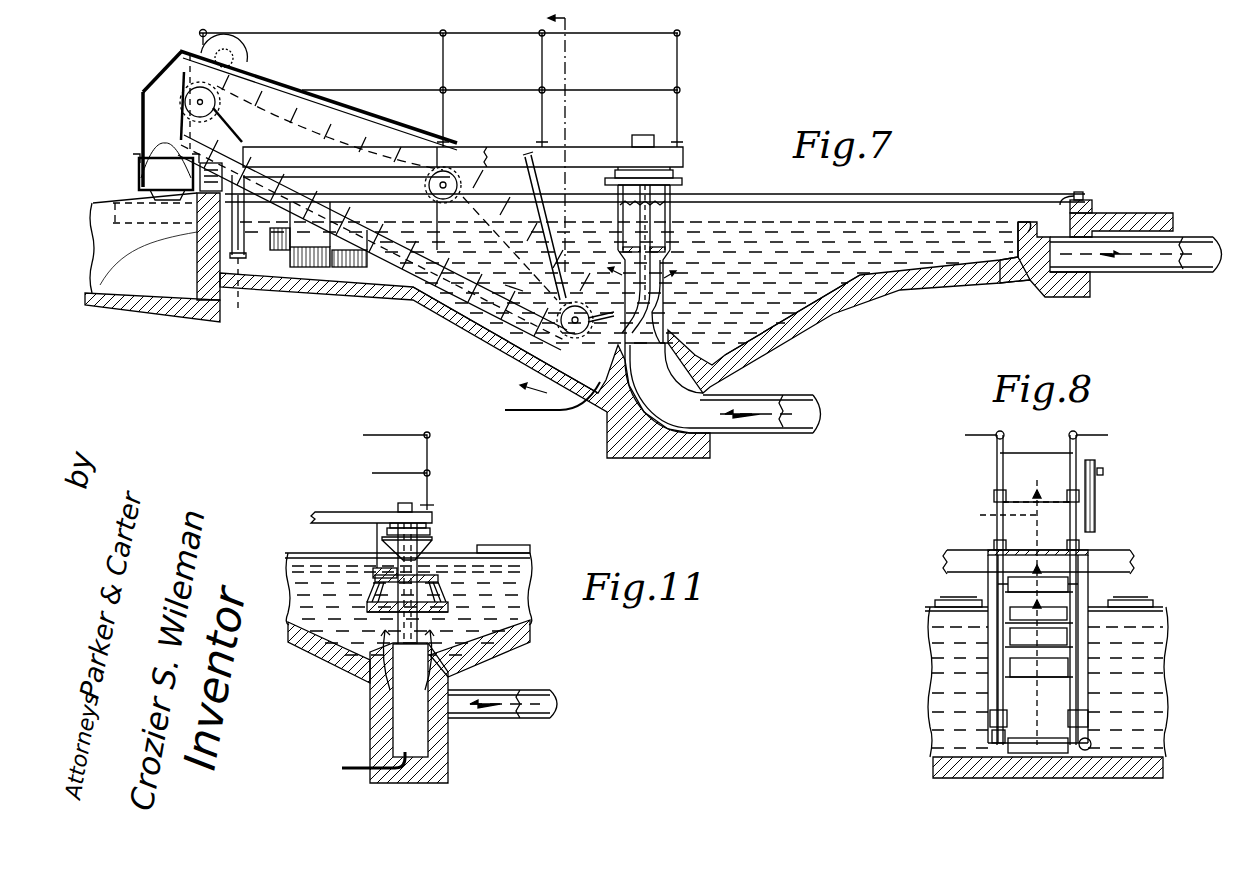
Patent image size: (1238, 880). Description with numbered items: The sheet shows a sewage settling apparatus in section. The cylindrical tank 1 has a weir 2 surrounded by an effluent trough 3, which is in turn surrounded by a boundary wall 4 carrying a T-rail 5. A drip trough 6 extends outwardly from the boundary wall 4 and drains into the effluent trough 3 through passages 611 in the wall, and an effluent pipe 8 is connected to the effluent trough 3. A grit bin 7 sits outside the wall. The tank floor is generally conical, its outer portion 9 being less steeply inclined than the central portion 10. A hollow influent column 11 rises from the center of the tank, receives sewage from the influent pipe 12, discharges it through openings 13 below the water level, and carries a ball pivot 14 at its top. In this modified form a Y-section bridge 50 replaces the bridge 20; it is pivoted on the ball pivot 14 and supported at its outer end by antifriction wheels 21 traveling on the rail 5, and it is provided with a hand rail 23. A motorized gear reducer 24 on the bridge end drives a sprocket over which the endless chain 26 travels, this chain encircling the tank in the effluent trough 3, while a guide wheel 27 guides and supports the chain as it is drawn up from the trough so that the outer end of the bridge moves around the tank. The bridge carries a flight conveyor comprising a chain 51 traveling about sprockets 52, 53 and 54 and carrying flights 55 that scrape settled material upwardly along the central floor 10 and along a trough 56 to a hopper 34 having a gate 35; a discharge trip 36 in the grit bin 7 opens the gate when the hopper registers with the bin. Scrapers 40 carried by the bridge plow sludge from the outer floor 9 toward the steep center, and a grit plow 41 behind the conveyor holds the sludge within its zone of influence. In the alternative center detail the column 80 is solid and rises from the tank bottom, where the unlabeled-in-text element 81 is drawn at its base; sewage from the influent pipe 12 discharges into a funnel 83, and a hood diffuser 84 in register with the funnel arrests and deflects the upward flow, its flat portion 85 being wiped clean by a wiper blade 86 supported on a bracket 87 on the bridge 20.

In FIG. 7, the cylindrical tank 1 is at (843, 300).
In FIG. 11, the cylindrical tank 1 is at (300, 640).
In FIG. 8, the cylindrical tank 1 is at (1168, 600).
In FIG. 7, the weir 2 is at (1018, 218).
In FIG. 7, the effluent trough 3 is at (247, 262).
In FIG. 7, the boundary wall 4 is at (197, 236).
In FIG. 11, the boundary wall 4 is at (298, 560).
In FIG. 8, the boundary wall 4 is at (1165, 618).
In FIG. 7, the T-rail 5 is at (1080, 194).
In FIG. 11, the T-rail 5 is at (515, 545).
In FIG. 8, the T-rail 5 is at (940, 598).
In FIG. 7, the drip trough 6 is at (1120, 213).
In FIG. 7, the passages 611 is at (1062, 196).
In FIG. 7, the grit bin 7 is at (100, 215).
In FIG. 7, the effluent pipe 8 is at (1140, 285).
In FIG. 7, the outer floor portion 9 is at (950, 276).
In FIG. 7, the central floor portion 10 is at (760, 328).
In FIG. 11, the central floor portion 10 is at (515, 642).
In FIG. 8, the central floor portion 10 is at (935, 770).
In FIG. 7, the hollow influent column 11 is at (668, 322).
In FIG. 7, the influent pipe 12 is at (768, 435).
In FIG. 11, the influent pipe 12 is at (512, 690).
In FIG. 7, the openings 13 is at (662, 278).
In FIG. 7, the ball pivot 14 is at (682, 178).
In FIG. 11, the ball pivot 14 is at (425, 545).
In FIG. 11, the bridge 20 is at (330, 512).
In FIG. 7, the antifriction wheels 21 is at (222, 183).
In FIG. 7, the hand rail 23 is at (677, 67).
In FIG. 11, the hand rail 23 is at (430, 458).
In FIG. 8, the hand rail 23 is at (985, 428).
In FIG. 7, the motorized gear reducer 24 is at (247, 56).
In FIG. 7, the endless chain 26 is at (240, 293).
In FIG. 7, the guide wheel 27 is at (246, 218).
In FIG. 7, the hopper 34 is at (143, 142).
In FIG. 7, the gate 35 is at (139, 177).
In FIG. 7, the discharge trip 36 is at (178, 212).
In FIG. 7, the scrapers 40 is at (326, 267).
In FIG. 7, the grit plow 41 is at (533, 300).
In FIG. 8, the grit plow 41 is at (1090, 742).
In FIG. 7, the bridge 50 is at (578, 150).
In FIG. 8, the bridge 50 is at (1008, 550).
In FIG. 7, the chain 51 is at (345, 200).
In FIG. 8, the chain 51 is at (1039, 552).
In FIG. 7, the sprocket 52 is at (584, 308).
In FIG. 7, the sprocket 53 is at (452, 172).
In FIG. 8, the sprocket 53 is at (1040, 580).
In FIG. 7, the sprocket 54 is at (185, 101).
In FIG. 8, the sprocket 54 is at (992, 513).
In FIG. 7, the flights 55 is at (360, 150).
In FIG. 8, the flights 55 is at (1020, 668).
In FIG. 7, the trough 56 is at (370, 290).
In FIG. 11, the solid column 80 is at (395, 613).
In FIG. 11, the pipe elbow 81 is at (420, 745).
In FIG. 11, the funnel 83 is at (395, 660).
In FIG. 11, the hood diffuser 84 is at (445, 596).
In FIG. 11, the flat portion 85 is at (430, 578).
In FIG. 11, the wiper blade 86 is at (372, 577).
In FIG. 11, the bracket 87 is at (375, 534).